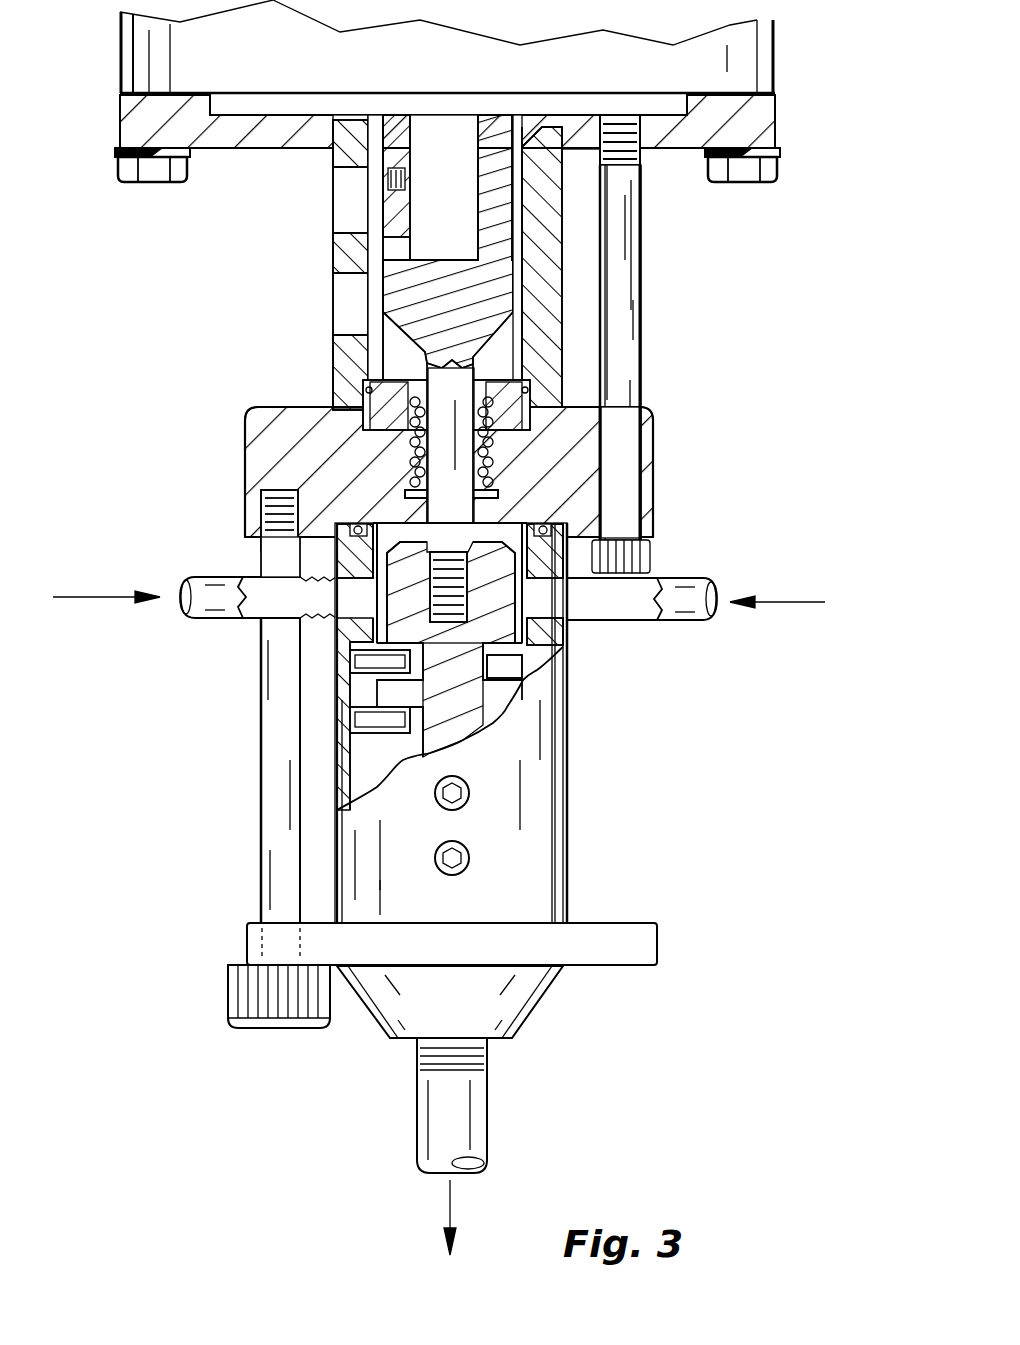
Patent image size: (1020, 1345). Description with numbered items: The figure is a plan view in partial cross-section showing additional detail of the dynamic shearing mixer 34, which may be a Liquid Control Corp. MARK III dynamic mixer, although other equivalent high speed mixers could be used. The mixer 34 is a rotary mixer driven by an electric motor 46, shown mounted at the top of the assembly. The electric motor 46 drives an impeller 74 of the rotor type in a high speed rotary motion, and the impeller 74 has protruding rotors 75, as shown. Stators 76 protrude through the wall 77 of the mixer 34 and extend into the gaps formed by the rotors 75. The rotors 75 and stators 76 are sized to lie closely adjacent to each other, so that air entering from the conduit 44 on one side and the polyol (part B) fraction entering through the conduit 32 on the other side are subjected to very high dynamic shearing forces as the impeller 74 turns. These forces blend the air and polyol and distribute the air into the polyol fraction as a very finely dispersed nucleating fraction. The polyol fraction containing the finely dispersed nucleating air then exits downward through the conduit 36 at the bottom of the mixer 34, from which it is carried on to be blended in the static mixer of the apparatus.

The conduit 32 is at (693, 578).
The dynamic shearing mixer 34 is at (567, 870).
The conduit 36 is at (487, 1088).
The conduit 44 is at (200, 620).
The electric motor 46 is at (775, 38).
The impeller 74 is at (497, 565).
The rotors 75 is at (353, 693).
The stators 76 is at (352, 727).
The wall 77 is at (532, 712).